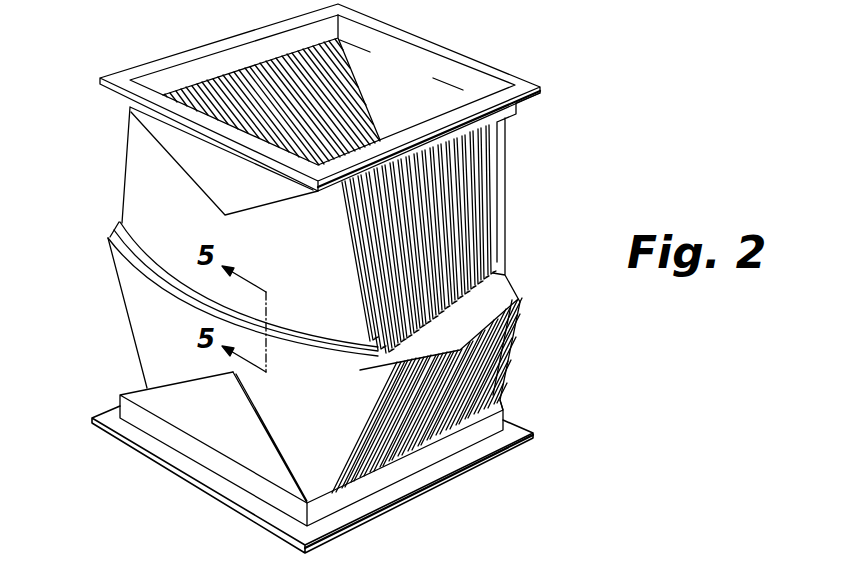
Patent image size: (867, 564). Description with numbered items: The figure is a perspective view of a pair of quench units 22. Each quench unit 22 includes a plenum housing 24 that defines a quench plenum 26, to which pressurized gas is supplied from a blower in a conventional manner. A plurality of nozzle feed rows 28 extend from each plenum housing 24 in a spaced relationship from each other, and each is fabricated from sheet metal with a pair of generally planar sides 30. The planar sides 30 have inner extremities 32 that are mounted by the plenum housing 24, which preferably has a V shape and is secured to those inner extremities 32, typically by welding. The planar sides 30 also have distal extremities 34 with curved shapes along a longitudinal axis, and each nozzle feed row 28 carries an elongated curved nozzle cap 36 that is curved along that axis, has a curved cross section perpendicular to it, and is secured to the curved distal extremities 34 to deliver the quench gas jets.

The quench unit 22 is at (526, 131).
The plenum housing 24 is at (196, 156).
The quench plenum 26 is at (398, 88).
The nozzle feed rows 28 is at (452, 208).
The planar sides 30 is at (140, 190).
The inner extremities 32 is at (177, 172).
The distal extremities 34 is at (166, 254).
The curved nozzle cap 36 is at (118, 229).